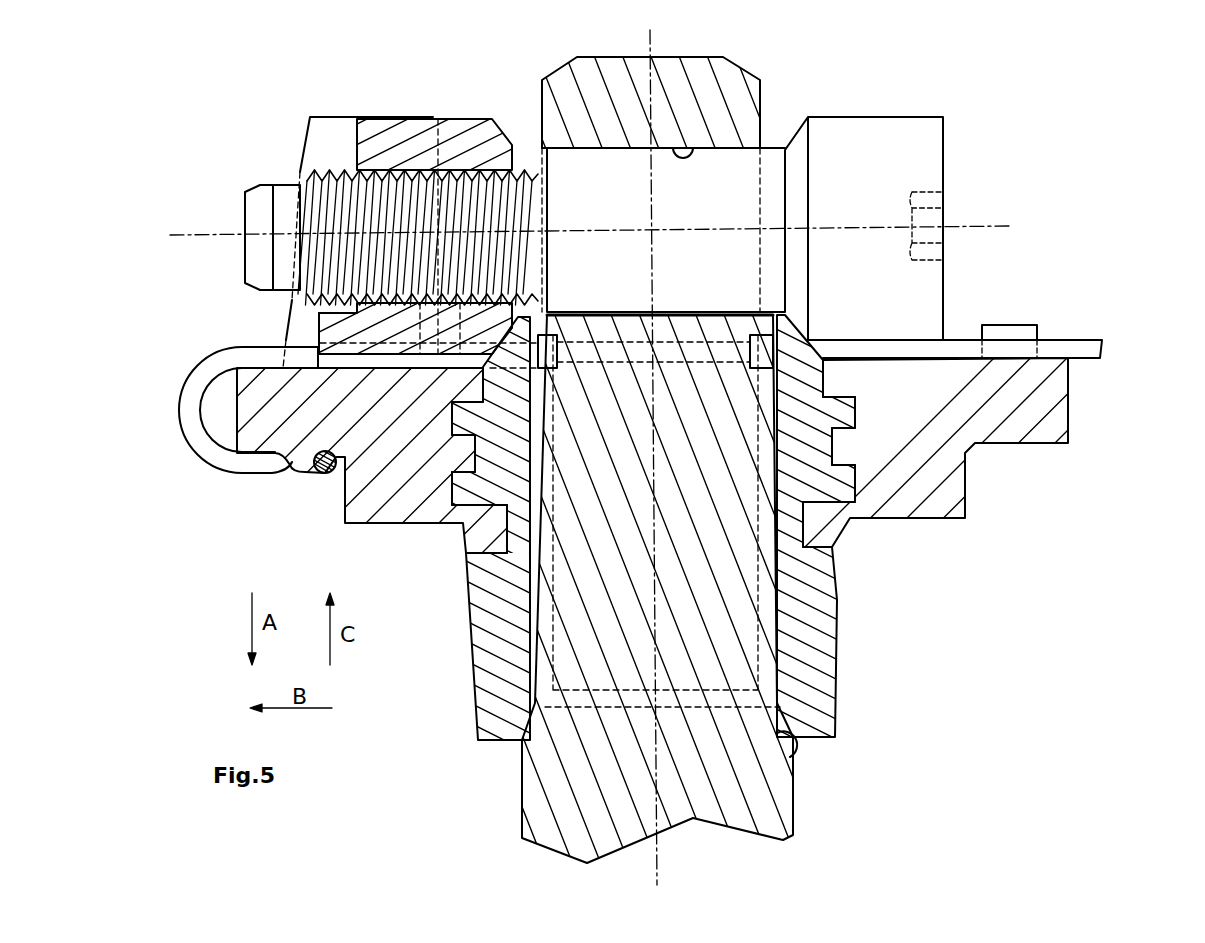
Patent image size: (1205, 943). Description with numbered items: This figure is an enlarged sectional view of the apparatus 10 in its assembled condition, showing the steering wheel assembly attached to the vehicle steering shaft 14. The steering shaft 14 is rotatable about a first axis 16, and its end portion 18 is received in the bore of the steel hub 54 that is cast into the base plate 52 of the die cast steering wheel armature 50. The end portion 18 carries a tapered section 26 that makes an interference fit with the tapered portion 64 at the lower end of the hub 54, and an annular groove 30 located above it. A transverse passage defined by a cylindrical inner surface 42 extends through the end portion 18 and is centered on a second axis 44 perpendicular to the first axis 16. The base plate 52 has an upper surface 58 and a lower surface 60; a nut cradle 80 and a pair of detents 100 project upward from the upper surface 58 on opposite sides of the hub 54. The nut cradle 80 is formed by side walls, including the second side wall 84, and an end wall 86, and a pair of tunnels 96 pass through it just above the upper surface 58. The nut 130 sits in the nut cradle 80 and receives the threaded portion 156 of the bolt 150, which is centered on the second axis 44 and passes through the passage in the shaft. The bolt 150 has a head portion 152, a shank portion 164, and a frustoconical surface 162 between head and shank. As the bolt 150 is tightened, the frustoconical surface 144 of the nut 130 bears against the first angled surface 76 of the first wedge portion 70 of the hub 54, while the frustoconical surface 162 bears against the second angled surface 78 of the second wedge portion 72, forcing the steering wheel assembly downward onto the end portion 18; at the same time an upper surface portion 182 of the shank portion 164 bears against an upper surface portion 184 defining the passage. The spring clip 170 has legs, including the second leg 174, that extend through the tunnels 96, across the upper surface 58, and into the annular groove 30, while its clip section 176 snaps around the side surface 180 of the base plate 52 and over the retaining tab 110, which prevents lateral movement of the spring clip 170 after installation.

The apparatus 10 is at (997, 562).
The vehicle steering shaft 14 is at (803, 822).
The first axis 16 is at (660, 855).
The end portion 18 is at (587, 77).
The tapered section 26 is at (785, 720).
The annular groove 30 is at (562, 315).
The cylindrical inner surface 42 is at (635, 315).
The second axis 44 is at (973, 220).
The steering wheel armature 50 is at (389, 530).
The base plate 52 is at (1060, 420).
The hub 54 is at (817, 668).
The upper surface 58 is at (1060, 358).
The lower surface 60 is at (1020, 450).
The tapered portion 64 is at (797, 760).
The first wedge portion 70 is at (505, 335).
The second wedge portion 72 is at (793, 330).
The first angled surface 76 is at (488, 345).
The second angled surface 78 is at (803, 333).
The nut cradle 80 is at (375, 104).
The second side wall 84 is at (330, 133).
The end wall 86 is at (337, 330).
The tunnels 96 is at (340, 352).
The detents 100 is at (1025, 325).
The retaining tab 110 is at (306, 467).
The nut 130 is at (458, 108).
The frustoconical surface 144 is at (510, 135).
The bolt 150 is at (950, 143).
The head portion 152 is at (887, 147).
The threaded portion 156 is at (337, 172).
The frustoconical surface 162 is at (790, 133).
The shank portion 164 is at (607, 170).
The spring clip 170 is at (170, 430).
The second leg 174 is at (1090, 350).
The clip section 176 is at (268, 474).
The side surface 180 is at (237, 428).
The upper surface portion 182 is at (722, 148).
The upper surface portion 184 is at (693, 153).